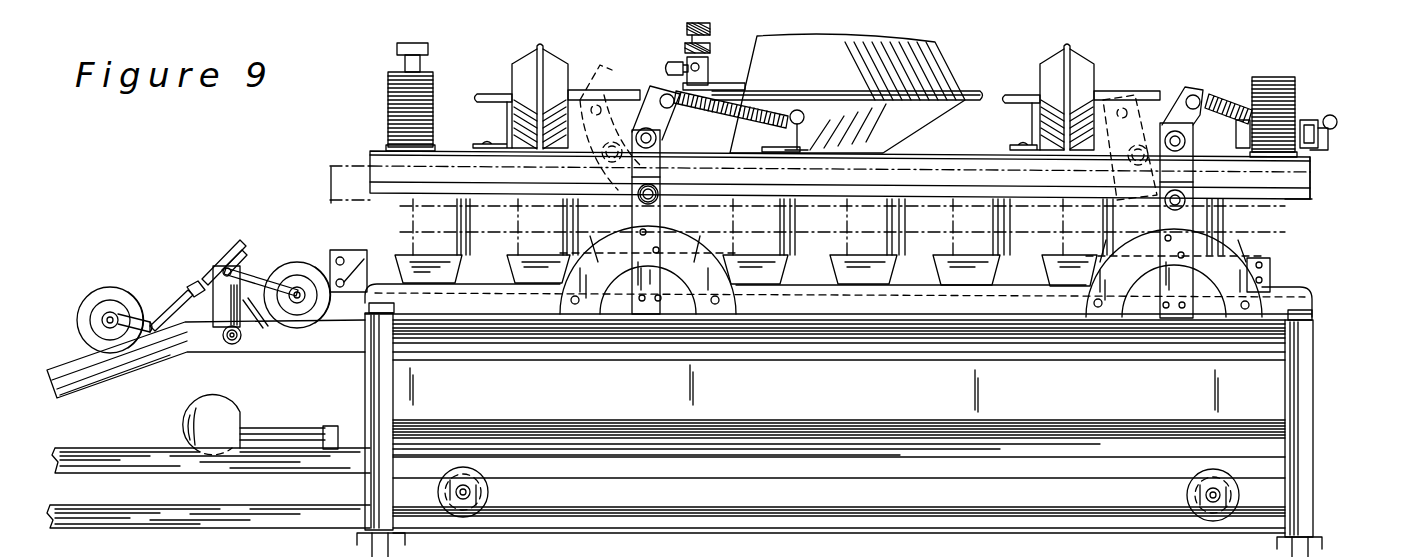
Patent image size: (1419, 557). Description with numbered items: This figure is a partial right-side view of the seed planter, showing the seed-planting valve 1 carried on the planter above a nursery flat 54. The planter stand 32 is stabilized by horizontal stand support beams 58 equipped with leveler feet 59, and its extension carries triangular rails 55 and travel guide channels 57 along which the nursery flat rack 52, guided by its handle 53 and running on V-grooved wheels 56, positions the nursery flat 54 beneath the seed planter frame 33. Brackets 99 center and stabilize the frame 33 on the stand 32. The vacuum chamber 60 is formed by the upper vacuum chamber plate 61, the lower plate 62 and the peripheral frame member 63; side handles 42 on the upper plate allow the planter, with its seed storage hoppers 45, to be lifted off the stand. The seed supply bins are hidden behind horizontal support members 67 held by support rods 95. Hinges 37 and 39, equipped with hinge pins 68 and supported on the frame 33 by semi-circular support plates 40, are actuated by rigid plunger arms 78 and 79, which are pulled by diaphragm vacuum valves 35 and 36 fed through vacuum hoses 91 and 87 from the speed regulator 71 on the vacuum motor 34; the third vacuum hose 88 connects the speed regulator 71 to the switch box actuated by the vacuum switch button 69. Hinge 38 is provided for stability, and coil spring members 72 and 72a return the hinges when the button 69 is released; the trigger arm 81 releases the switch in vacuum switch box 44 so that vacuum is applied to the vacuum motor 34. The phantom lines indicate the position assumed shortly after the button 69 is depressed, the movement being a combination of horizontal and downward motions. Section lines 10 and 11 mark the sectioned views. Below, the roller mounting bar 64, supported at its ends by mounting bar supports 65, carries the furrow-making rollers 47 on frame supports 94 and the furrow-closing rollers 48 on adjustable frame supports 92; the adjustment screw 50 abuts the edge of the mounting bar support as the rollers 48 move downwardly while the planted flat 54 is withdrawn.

The seed-planting valve 1 is at (430, 230).
The section line 10- 10 is at (313, 246).
The section line 11- 11 is at (868, 27).
The planter stand 32 is at (118, 367).
The seed planter frame 33 is at (1293, 287).
The vacuum motor 34 is at (943, 50).
The diaphragm vacuum valve 35 is at (1080, 58).
The diaphragm vacuum valve 36 is at (527, 50).
The front hinge means 37 is at (1203, 80).
The hinge means 38 is at (1182, 157).
The rear hinge means 39 is at (657, 83).
The semi-circular support plate 40 is at (570, 300).
The handle 42 is at (388, 85).
The vacuum switch box 44 is at (1313, 120).
The seed storage hopper 45 is at (523, 263).
The furrow-making roller 47 is at (303, 258).
The furrow-closing roller 48 is at (108, 290).
The adjustment screw 50 is at (192, 290).
The nursery flat rack 52 is at (522, 418).
The handle 53 is at (227, 403).
The nursery flat 54 is at (830, 397).
The rail 55 is at (100, 505).
The wheel 56 is at (490, 495).
The travel guide channel 57 is at (90, 448).
The stand support beam 58 is at (405, 535).
The leveler foot 59 is at (357, 548).
The vacuum chamber 60 is at (1317, 175).
The upper vacuum chamber plate 61 is at (440, 150).
The lower vacuum chamber plate 62 is at (1287, 197).
The peripheral frame member 63 is at (378, 162).
The roller mounting bar 64 is at (253, 322).
The mounting bar support 65 is at (227, 313).
The horizontal support member 67 is at (347, 250).
The hinge pin 68 is at (1147, 128).
The vacuum switch button 69 is at (398, 46).
The speed regulator 71 is at (710, 30).
The coil spring member 72 is at (741, 121).
The coil spring member 72a is at (1232, 103).
The plunger arm 78 is at (1105, 88).
The plunger arm 79 is at (586, 78).
The trigger arm 81 is at (1317, 137).
The vacuum hose 87 is at (497, 93).
The vacuum hose 88 is at (668, 60).
The vacuum hose 91 is at (1018, 92).
The adjustable frame support 92 is at (233, 248).
The frame support 94 is at (245, 262).
The support rod 95 is at (357, 262).
The bracket 99 is at (1305, 317).